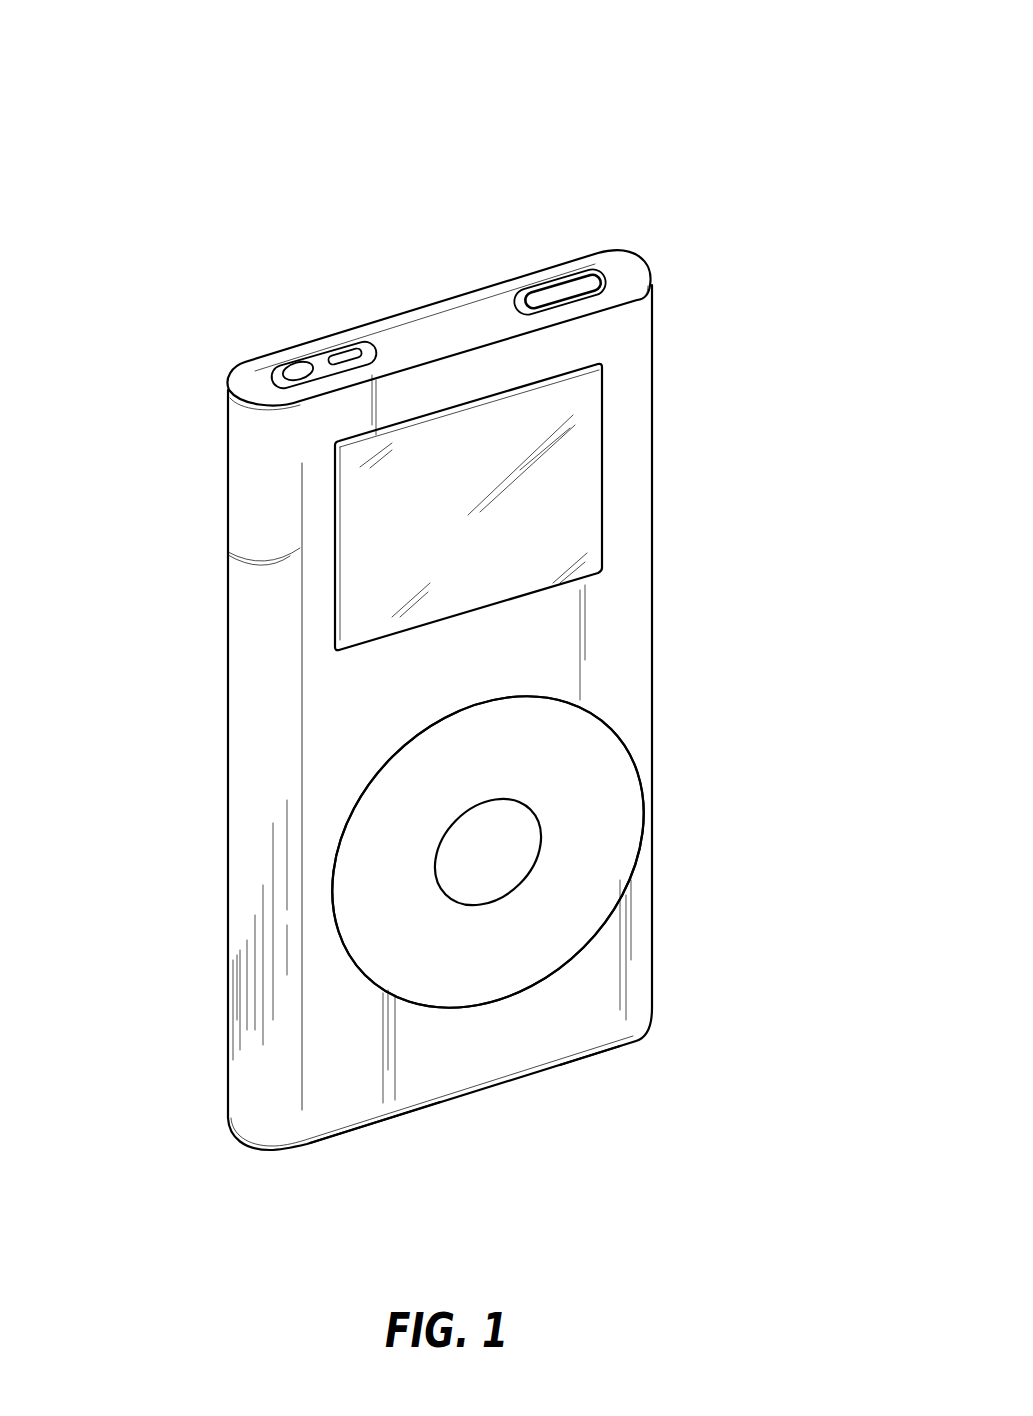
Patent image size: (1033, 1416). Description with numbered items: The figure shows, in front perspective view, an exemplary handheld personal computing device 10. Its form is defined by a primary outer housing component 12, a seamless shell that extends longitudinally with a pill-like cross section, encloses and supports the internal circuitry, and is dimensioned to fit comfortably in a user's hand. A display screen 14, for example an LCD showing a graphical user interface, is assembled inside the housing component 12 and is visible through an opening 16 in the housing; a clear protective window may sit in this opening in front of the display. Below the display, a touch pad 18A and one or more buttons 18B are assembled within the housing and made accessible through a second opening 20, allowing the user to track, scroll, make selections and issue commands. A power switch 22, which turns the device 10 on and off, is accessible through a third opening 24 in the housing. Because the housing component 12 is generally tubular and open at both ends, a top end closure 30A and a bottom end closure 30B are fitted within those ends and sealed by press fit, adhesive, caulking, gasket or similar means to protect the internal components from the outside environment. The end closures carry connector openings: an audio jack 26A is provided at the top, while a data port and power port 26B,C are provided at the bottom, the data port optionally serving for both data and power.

The computing device 10 is at (175, 120).
The primary outer housing component 12 is at (252, 663).
The display screen 14 is at (540, 420).
The opening 16 is at (540, 588).
The touch pad 18A is at (356, 867).
The buttons 18B is at (473, 872).
The second opening 20 is at (583, 947).
The power switch 22 is at (604, 254).
The third opening 24 is at (518, 297).
The audio jack 26A is at (270, 373).
The data port and power port 26B,C is at (537, 1097).
The top end closure 30A is at (437, 333).
The bottom end closure 30B is at (447, 1116).